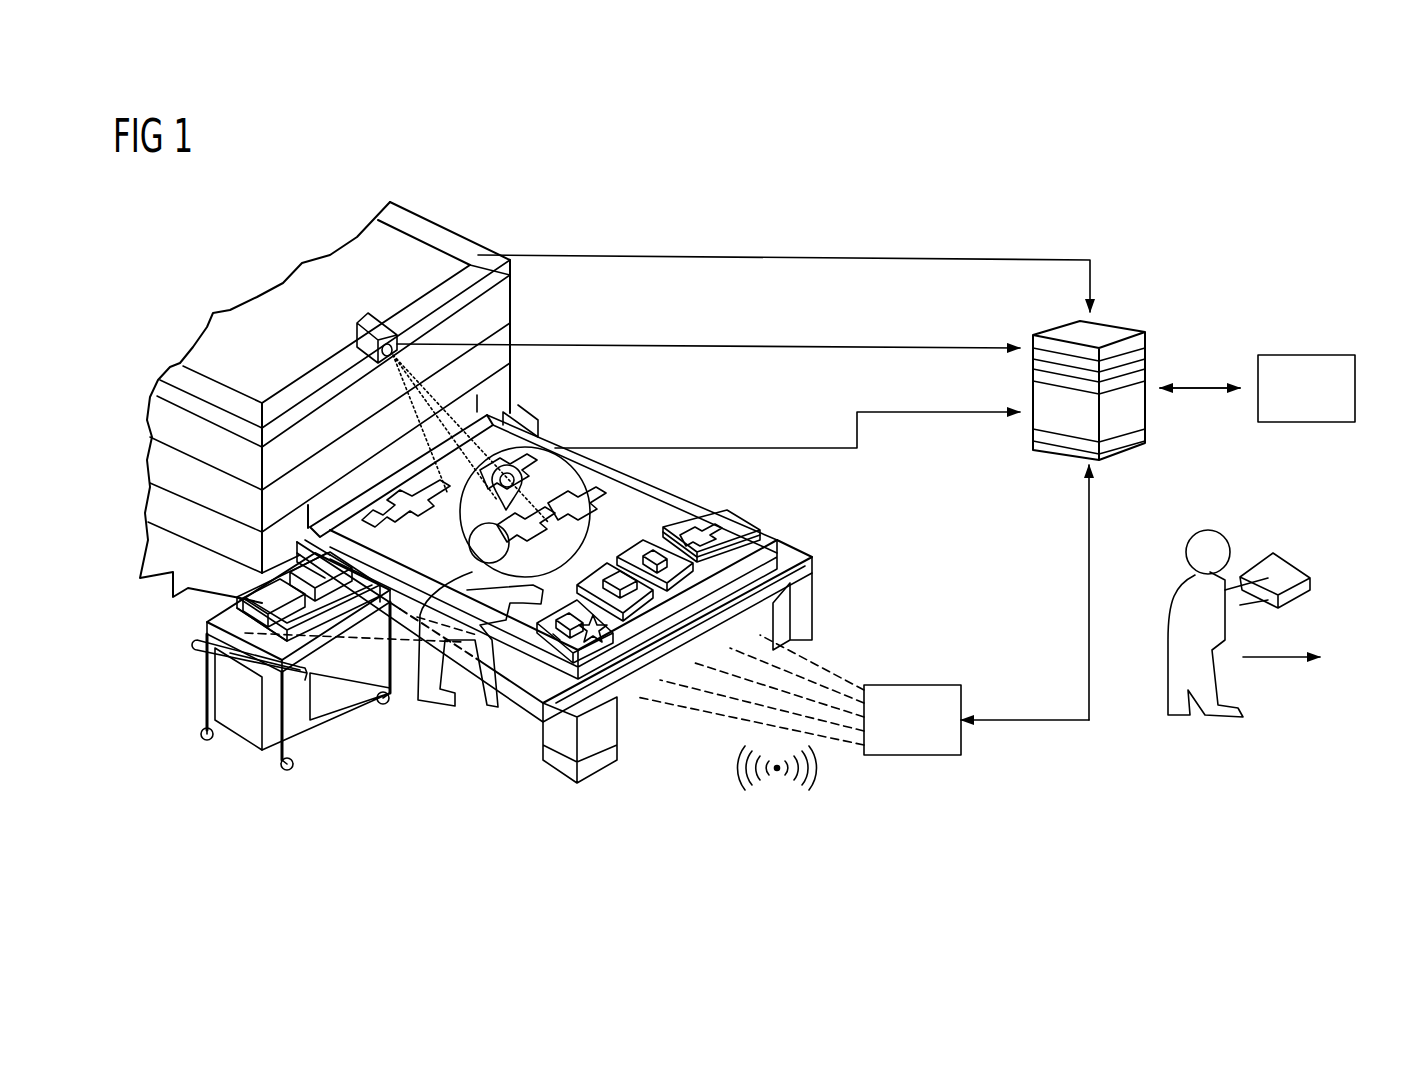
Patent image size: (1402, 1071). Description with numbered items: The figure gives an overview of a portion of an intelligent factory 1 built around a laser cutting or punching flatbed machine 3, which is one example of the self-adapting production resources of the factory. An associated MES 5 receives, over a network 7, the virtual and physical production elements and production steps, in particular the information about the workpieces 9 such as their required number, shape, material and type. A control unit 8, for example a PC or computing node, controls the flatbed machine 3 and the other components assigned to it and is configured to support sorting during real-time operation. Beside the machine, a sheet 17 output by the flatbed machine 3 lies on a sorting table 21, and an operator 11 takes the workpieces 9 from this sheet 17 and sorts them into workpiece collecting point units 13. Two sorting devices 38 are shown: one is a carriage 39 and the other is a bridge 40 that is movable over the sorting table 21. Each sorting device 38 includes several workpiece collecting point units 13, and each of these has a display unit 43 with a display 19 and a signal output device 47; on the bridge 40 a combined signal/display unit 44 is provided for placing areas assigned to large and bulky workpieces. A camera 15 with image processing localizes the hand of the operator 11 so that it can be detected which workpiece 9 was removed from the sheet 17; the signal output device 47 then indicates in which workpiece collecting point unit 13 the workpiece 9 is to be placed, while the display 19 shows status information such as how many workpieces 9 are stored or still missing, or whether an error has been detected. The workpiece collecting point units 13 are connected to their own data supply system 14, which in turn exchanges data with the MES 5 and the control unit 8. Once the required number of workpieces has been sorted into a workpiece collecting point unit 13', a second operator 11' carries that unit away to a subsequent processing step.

The intelligent factory 1 is at (722, 212).
The laser cutting or punching flatbed machine 3 is at (245, 292).
The MES 5 is at (1307, 355).
The network 7 is at (1148, 279).
The control unit 8 is at (1128, 444).
The workpieces 9 is at (430, 513).
The operator 11 is at (504, 609).
The operator 11' is at (1242, 652).
The workpiece collecting point unit 13 is at (489, 601).
The workpiece collecting point unit 13' is at (1275, 559).
The data supply system 14 is at (912, 685).
The camera 15 is at (375, 322).
The sheet 17 is at (335, 525).
The display 19 is at (212, 681).
The sorting table 21 is at (620, 730).
The sorting devices 38 is at (232, 752).
The carriage 39 is at (312, 733).
The bridge 40 is at (690, 510).
The display unit 43 is at (205, 620).
The combined signal/display unit 44 is at (748, 520).
The signal output device 47 is at (265, 660).